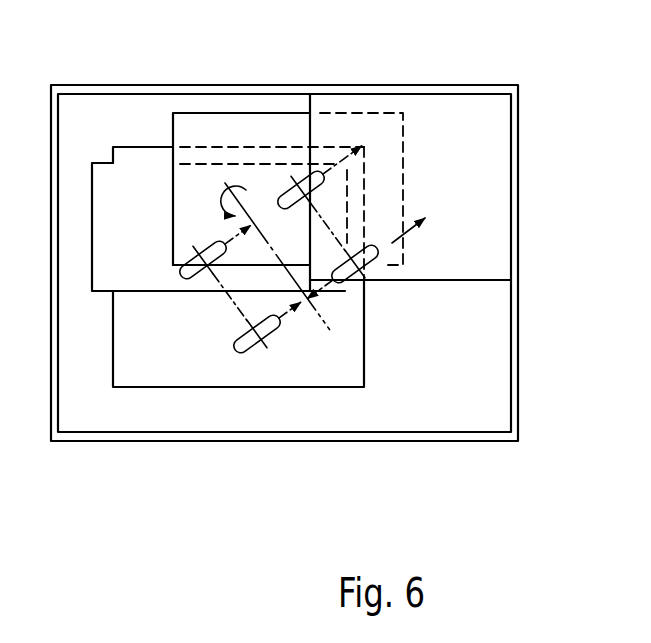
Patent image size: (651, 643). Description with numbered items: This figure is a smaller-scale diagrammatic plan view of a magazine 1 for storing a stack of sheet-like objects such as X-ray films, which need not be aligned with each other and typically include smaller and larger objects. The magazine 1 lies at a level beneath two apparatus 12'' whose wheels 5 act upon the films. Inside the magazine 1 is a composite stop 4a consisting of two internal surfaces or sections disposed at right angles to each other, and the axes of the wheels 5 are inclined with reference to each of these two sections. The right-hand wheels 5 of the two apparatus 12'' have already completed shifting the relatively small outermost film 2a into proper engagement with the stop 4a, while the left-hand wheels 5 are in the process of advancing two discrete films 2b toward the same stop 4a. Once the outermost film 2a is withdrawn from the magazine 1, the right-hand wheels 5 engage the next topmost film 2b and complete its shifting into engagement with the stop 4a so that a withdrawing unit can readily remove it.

The magazine 1 is at (520, 257).
The outermost film 2a is at (452, 262).
The sheet-like objects 2b is at (173, 133).
The composite stop 4a is at (511, 118).
The wheels 5 is at (199, 280).
The apparatus 12'' is at (258, 269).